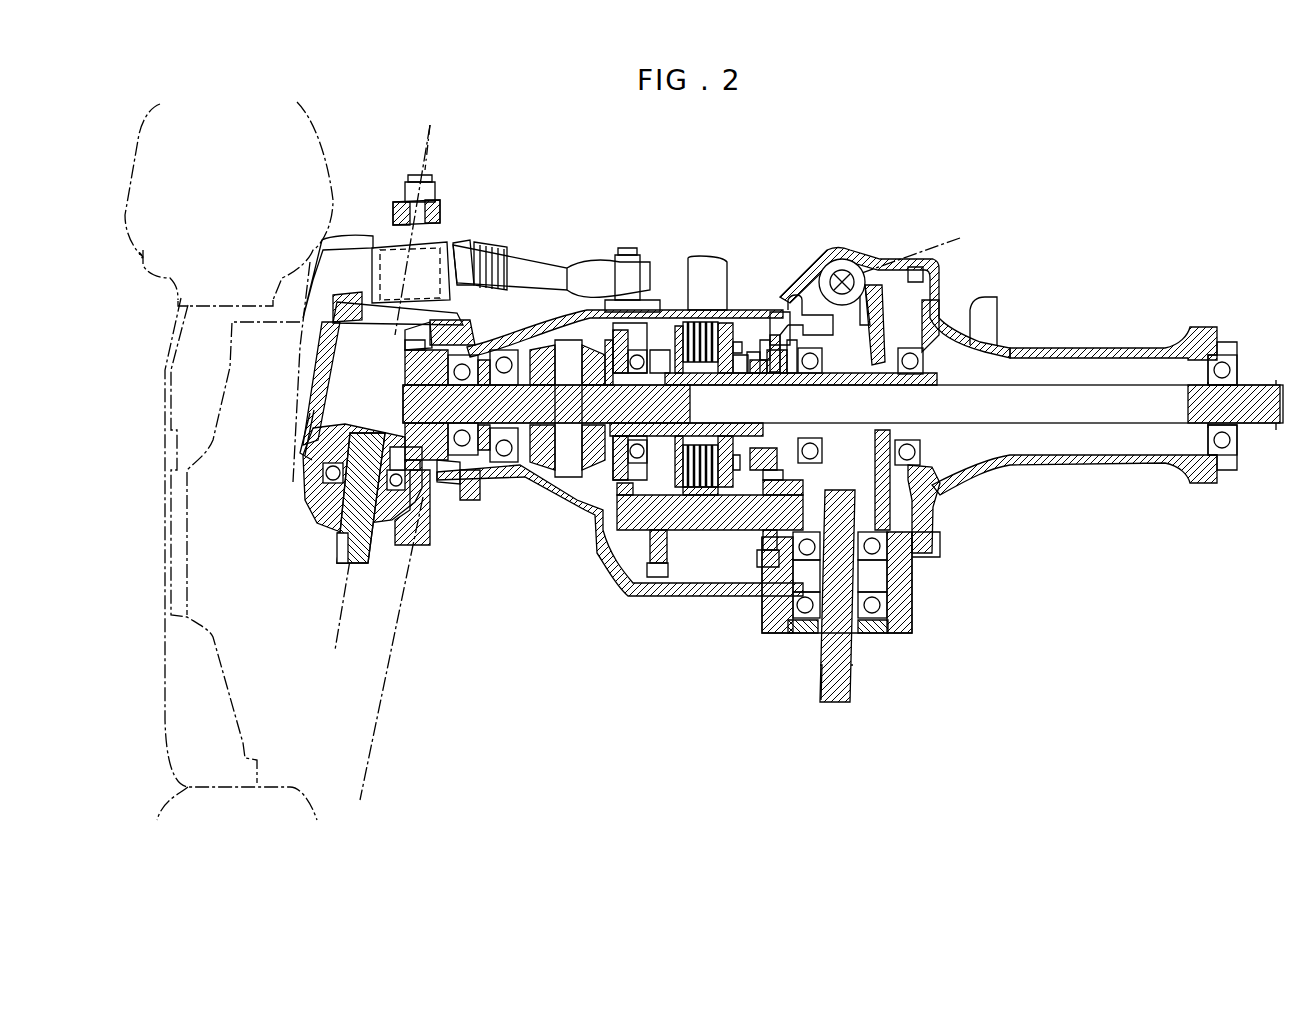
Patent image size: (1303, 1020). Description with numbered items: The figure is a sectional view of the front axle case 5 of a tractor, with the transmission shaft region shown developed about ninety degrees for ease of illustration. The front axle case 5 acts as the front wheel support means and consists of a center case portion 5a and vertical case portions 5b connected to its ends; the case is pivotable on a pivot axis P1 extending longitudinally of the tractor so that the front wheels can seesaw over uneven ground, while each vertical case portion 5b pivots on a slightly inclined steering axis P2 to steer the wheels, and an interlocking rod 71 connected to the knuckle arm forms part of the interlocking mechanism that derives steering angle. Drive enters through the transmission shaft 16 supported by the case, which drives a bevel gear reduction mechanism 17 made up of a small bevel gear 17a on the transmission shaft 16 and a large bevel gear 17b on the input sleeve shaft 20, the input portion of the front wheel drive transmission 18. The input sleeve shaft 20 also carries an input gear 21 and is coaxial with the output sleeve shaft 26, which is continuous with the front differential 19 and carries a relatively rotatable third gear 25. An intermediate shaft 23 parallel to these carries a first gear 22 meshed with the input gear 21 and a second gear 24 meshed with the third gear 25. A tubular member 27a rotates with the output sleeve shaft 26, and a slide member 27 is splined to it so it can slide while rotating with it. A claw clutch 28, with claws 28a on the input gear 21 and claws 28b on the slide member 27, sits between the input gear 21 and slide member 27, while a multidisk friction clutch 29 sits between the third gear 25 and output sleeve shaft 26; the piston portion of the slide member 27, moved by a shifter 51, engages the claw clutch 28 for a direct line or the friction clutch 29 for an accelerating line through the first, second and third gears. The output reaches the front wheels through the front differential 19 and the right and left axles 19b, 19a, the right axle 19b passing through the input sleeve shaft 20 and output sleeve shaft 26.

The front axle case 5 is at (535, 668).
The center case portion 5a is at (633, 587).
The vertical case portion 5b is at (390, 682).
The transmission shaft 16 is at (822, 692).
The bevel gear reduction mechanism 17 is at (888, 515).
The small bevel gear 17a is at (830, 500).
The large bevel gear 17b is at (882, 292).
The front wheel drive transmission 18 is at (775, 345).
The front differential 19 is at (565, 487).
The left axle 19a is at (487, 480).
The right axle 19b is at (1068, 413).
The input sleeve shaft 20 is at (923, 383).
The input gear 21 is at (793, 340).
The first gear 22 is at (765, 553).
The intermediate shaft 23 is at (706, 520).
The second gear 24 is at (648, 583).
The third gear 25 is at (658, 352).
The output sleeve shaft 26 is at (705, 372).
The slide member 27 is at (713, 327).
The tubular member 27a is at (760, 373).
The claw clutch 28 is at (757, 348).
The claws 28a is at (765, 345).
The claws 28b is at (748, 348).
The multidisk friction clutch 29 is at (690, 318).
The shifter 51 is at (738, 344).
The interlocking rod 71 is at (530, 262).
The pivot axis P1 is at (889, 259).
The steering axis P2 is at (440, 136).